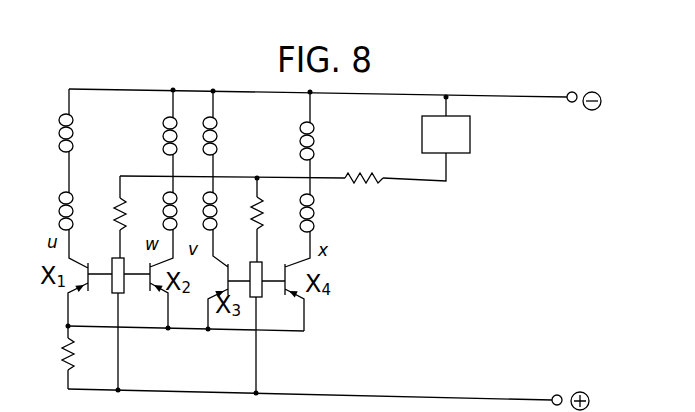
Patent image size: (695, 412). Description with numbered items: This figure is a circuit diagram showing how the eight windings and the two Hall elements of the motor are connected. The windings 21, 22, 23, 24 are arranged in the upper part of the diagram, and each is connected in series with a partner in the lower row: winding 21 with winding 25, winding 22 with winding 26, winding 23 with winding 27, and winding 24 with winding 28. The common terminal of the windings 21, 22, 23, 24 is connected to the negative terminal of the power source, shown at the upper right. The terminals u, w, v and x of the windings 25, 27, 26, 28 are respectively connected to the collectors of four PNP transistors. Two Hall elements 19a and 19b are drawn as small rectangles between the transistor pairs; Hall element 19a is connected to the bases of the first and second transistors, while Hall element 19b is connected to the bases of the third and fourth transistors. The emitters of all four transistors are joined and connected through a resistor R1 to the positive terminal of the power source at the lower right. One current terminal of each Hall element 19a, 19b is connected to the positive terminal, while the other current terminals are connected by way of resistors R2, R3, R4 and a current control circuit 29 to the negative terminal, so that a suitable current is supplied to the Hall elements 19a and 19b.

The winding 21 is at (62, 128).
The winding 22 is at (220, 141).
The winding 23 is at (165, 136).
The winding 24 is at (320, 151).
The winding 25 is at (61, 211).
The winding 26 is at (219, 212).
The winding 27 is at (165, 216).
The winding 28 is at (321, 214).
The current control circuit 29 is at (461, 154).
The Hall element 19a is at (113, 288).
The Hall element 19b is at (256, 298).
The resistor R1 is at (51, 357).
The resistor R2 is at (109, 217).
The resistor R3 is at (271, 220).
The resistor R4 is at (365, 168).